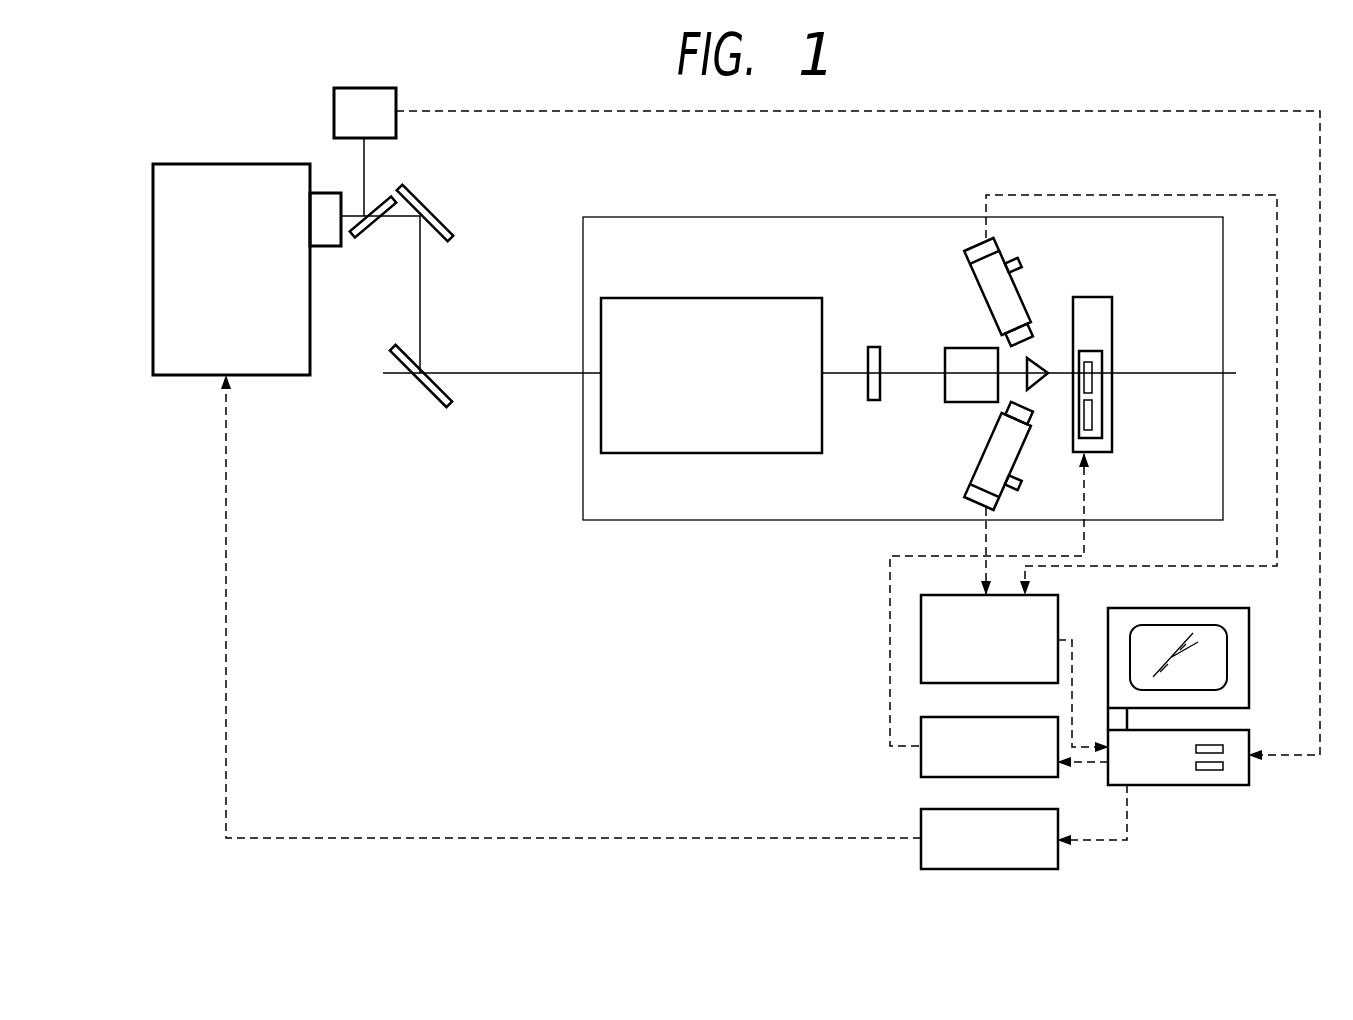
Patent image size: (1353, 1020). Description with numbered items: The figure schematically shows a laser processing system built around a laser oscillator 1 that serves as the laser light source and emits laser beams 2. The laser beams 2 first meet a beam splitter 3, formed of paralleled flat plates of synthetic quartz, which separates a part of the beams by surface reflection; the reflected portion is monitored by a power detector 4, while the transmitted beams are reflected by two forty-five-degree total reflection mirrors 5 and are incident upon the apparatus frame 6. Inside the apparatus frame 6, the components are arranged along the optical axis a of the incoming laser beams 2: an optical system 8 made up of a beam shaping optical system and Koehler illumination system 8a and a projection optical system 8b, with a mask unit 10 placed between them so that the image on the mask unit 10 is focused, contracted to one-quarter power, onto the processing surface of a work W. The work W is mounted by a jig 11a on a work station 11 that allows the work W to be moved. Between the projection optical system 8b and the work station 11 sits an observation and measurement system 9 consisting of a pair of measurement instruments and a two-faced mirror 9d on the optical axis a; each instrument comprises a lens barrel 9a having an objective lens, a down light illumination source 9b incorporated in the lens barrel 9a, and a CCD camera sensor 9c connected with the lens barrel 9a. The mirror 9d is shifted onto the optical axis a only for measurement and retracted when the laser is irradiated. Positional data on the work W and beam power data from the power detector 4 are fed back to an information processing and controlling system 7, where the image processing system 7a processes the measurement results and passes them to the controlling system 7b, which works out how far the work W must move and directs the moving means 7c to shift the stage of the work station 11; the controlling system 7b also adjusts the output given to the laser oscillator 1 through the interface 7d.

The laser oscillator 1 is at (178, 163).
The laser beams 2 is at (420, 278).
The beam splitter 3 is at (371, 236).
The power detector 4 is at (334, 100).
The 45-degree total reflection mirrors 5 is at (432, 203).
The apparatus frame 6 is at (636, 524).
The information processing and controlling system 7 is at (888, 605).
The image processing system 7a is at (951, 595).
The controlling system 7b is at (1224, 787).
The moving means 7c is at (951, 717).
The interface 7d is at (951, 809).
The optical system 8 is at (710, 342).
The beam shaping optical system and Koehler illumination system 8a is at (643, 297).
The projection optical system 8b is at (948, 349).
The observation and measurement system 9 is at (986, 344).
The lens barrel 9a is at (975, 282).
The down light illumination source 9b is at (1030, 272).
The CCD camera sensor 9c is at (962, 258).
The two-faced mirror 9d is at (1040, 388).
The mask unit 10 is at (870, 346).
The work station 11 is at (1117, 372).
The jig 11a is at (1100, 442).
The work W is at (1092, 367).
The optical axis a is at (476, 372).